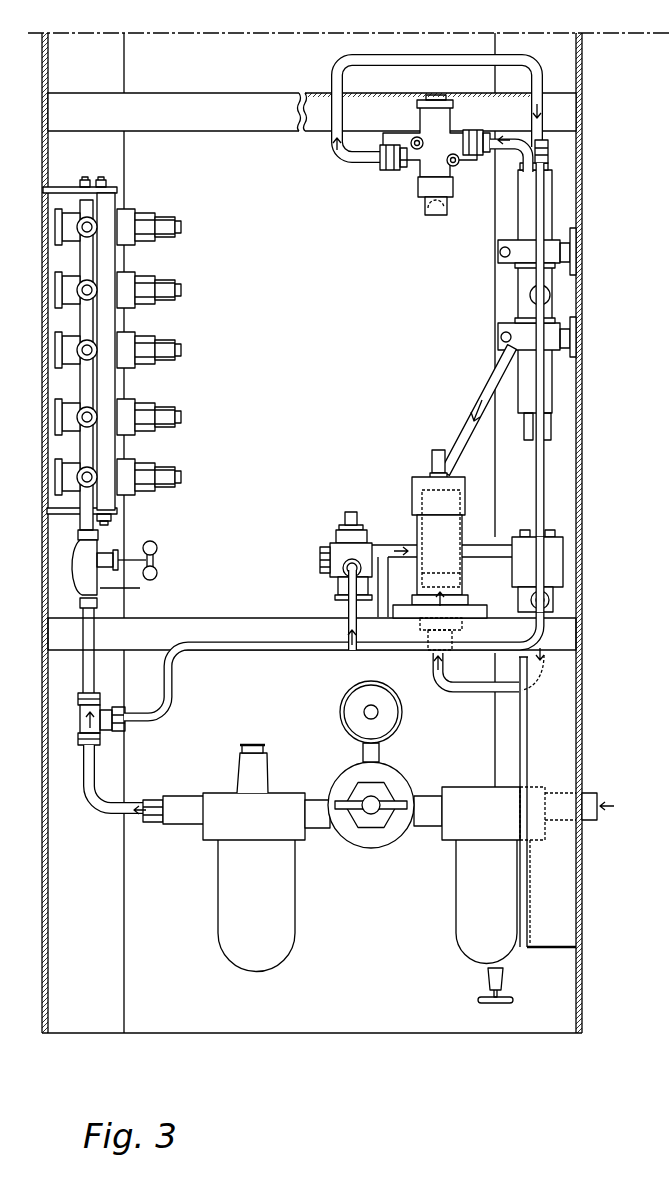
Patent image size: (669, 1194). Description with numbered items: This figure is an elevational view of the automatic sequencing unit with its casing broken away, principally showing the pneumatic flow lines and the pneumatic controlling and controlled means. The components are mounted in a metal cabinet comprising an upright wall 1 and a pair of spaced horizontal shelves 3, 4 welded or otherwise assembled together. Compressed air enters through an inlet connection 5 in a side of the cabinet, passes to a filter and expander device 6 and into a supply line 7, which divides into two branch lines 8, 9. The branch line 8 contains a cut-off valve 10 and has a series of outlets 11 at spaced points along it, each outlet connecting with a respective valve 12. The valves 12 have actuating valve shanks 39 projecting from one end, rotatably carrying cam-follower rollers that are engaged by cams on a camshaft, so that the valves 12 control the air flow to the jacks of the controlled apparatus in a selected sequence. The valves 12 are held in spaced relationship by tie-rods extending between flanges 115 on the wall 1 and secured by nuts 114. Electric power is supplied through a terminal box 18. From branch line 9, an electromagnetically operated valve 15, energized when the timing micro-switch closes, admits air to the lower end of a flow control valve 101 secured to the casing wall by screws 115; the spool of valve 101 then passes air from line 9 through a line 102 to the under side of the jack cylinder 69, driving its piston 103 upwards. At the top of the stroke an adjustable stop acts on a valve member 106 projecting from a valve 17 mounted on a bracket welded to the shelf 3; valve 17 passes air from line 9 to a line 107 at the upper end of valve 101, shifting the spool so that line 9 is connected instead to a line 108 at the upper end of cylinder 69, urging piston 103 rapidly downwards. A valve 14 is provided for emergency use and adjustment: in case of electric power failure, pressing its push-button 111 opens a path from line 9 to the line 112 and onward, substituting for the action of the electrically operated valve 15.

The upright wall 1 is at (41, 78).
The horizontal shelf 3 is at (195, 105).
The horizontal shelf 4 is at (228, 628).
The inlet connection 5 is at (590, 822).
The filter and expander device 6 is at (369, 851).
The supply line 7 is at (104, 812).
The branch line 8 is at (93, 254).
The branch line 9 is at (510, 150).
The cut-off valve 10 is at (105, 578).
The outlets 11 is at (80, 413).
The valves 12 is at (68, 238).
The valve 14 is at (368, 530).
The electromagnetically operated valve 15 is at (565, 577).
The valve 17 is at (422, 130).
The terminal box 18 is at (557, 948).
The actuating valve shanks 39 is at (181, 226).
The jack cylinder 69 is at (464, 508).
The flow control valve 101 is at (553, 305).
The line 102 is at (448, 698).
The piston 103 is at (462, 588).
The valve member 106 is at (434, 217).
The line 107 is at (400, 55).
The line 108 is at (462, 432).
The push-button 111 is at (355, 512).
The line 112 is at (393, 558).
The nuts 114 is at (112, 177).
The flanges 115 is at (115, 192).